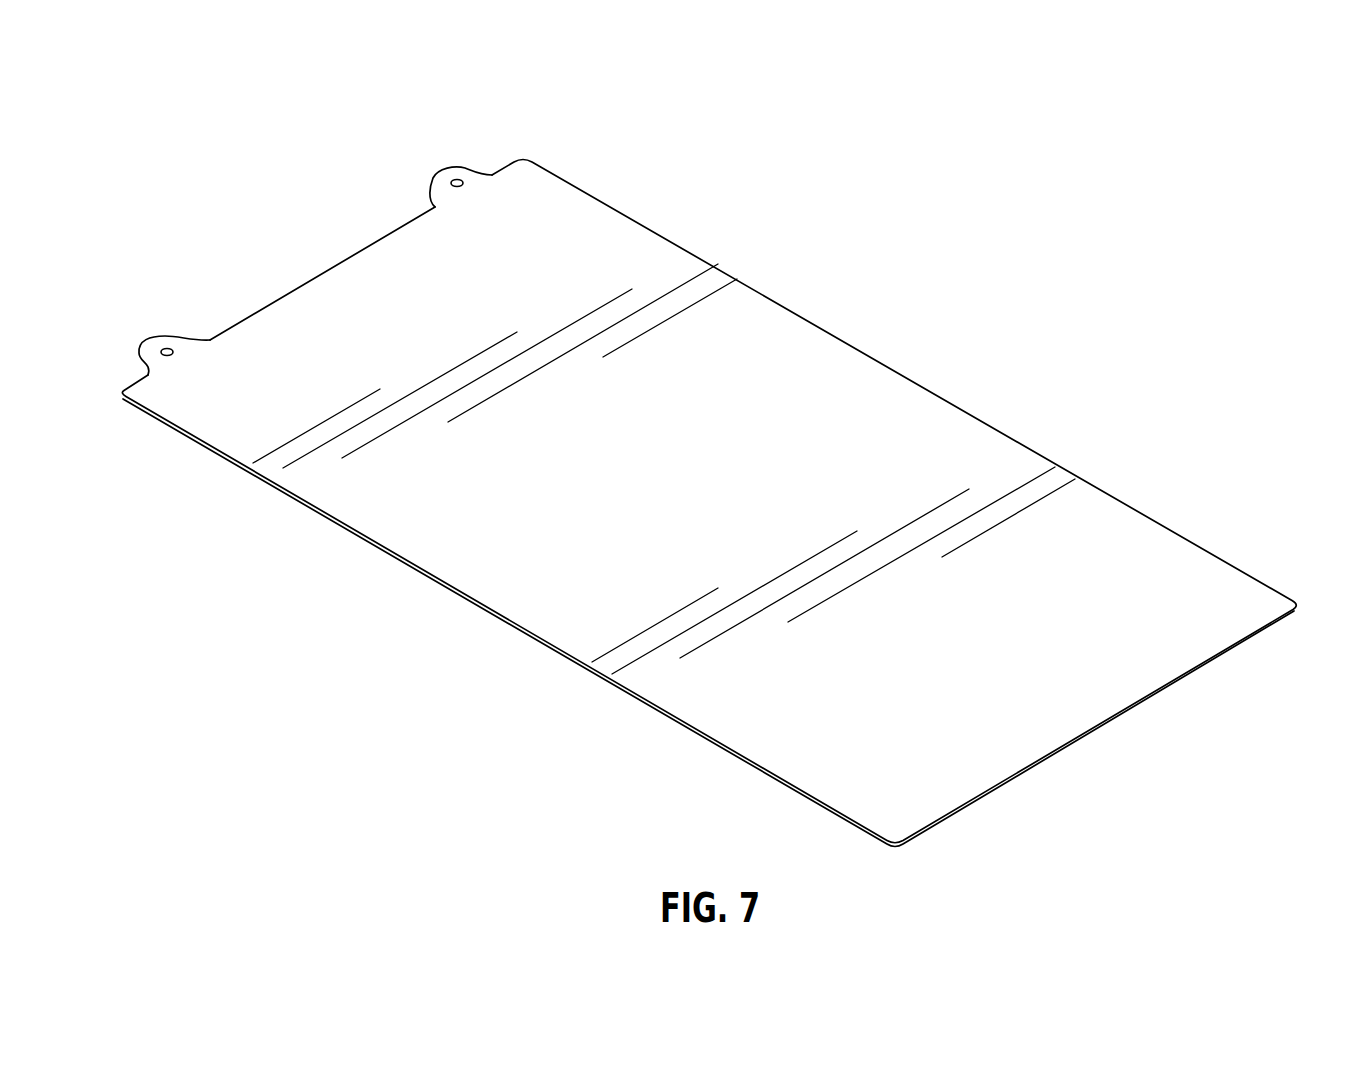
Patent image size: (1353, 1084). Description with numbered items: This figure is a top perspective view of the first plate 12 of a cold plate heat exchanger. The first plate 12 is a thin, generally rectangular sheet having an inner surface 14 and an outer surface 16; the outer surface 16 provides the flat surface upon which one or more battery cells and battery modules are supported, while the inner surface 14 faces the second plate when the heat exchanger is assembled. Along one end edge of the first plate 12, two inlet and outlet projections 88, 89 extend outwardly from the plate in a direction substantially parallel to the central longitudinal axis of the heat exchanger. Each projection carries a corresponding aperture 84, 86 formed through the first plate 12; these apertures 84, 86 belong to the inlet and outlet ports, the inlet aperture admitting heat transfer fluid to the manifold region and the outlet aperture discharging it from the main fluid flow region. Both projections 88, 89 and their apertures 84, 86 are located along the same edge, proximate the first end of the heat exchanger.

The first plate 12 is at (904, 324).
The inner surface 14 is at (1165, 693).
The outer surface 16 is at (668, 481).
The aperture 84 is at (168, 348).
The aperture 86 is at (458, 177).
The inlet projection 88 is at (148, 340).
The outlet projection 89 is at (438, 172).